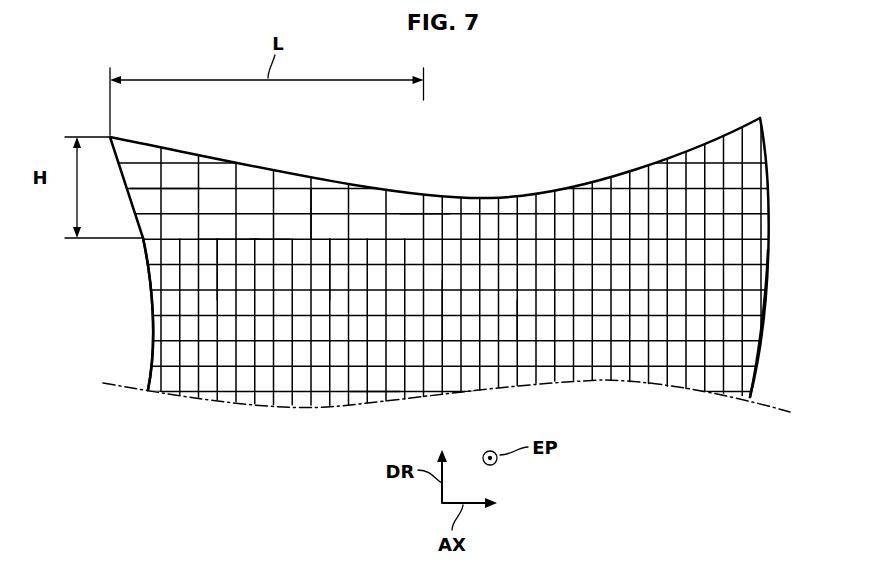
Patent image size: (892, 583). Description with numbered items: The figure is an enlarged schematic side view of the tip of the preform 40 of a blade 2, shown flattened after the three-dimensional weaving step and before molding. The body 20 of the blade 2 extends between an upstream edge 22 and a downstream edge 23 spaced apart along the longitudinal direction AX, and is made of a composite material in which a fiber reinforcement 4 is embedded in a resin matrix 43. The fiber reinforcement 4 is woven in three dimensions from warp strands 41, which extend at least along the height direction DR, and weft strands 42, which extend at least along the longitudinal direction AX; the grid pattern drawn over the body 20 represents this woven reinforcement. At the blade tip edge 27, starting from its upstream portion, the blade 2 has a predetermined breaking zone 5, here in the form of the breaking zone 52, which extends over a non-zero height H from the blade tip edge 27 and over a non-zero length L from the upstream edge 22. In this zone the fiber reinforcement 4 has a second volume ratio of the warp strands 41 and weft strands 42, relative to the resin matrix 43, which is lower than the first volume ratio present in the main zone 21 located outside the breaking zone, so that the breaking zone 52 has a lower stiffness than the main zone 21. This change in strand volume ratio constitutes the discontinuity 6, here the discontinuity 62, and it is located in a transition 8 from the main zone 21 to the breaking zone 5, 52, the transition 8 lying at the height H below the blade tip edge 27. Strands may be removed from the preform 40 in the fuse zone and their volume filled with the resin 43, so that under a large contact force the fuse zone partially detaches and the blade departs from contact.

The blade 2 is at (821, 183).
The fiber reinforcement 4 is at (451, 290).
The predetermined breaking zone 5 is at (143, 178).
The discontinuity 6 is at (265, 238).
The transition 8 is at (218, 240).
The body 20 is at (691, 103).
The main zone 21 is at (312, 337).
The upstream edge 22 is at (150, 326).
The downstream edge 23 is at (772, 256).
The blade tip edge 27 is at (180, 149).
The preform 40 is at (524, 324).
The warp strands 41 is at (275, 350).
The weft strands 42 is at (617, 290).
The resin matrix 43 is at (375, 352).
The breaking zone 52 is at (327, 205).
The discontinuity 62 is at (228, 238).